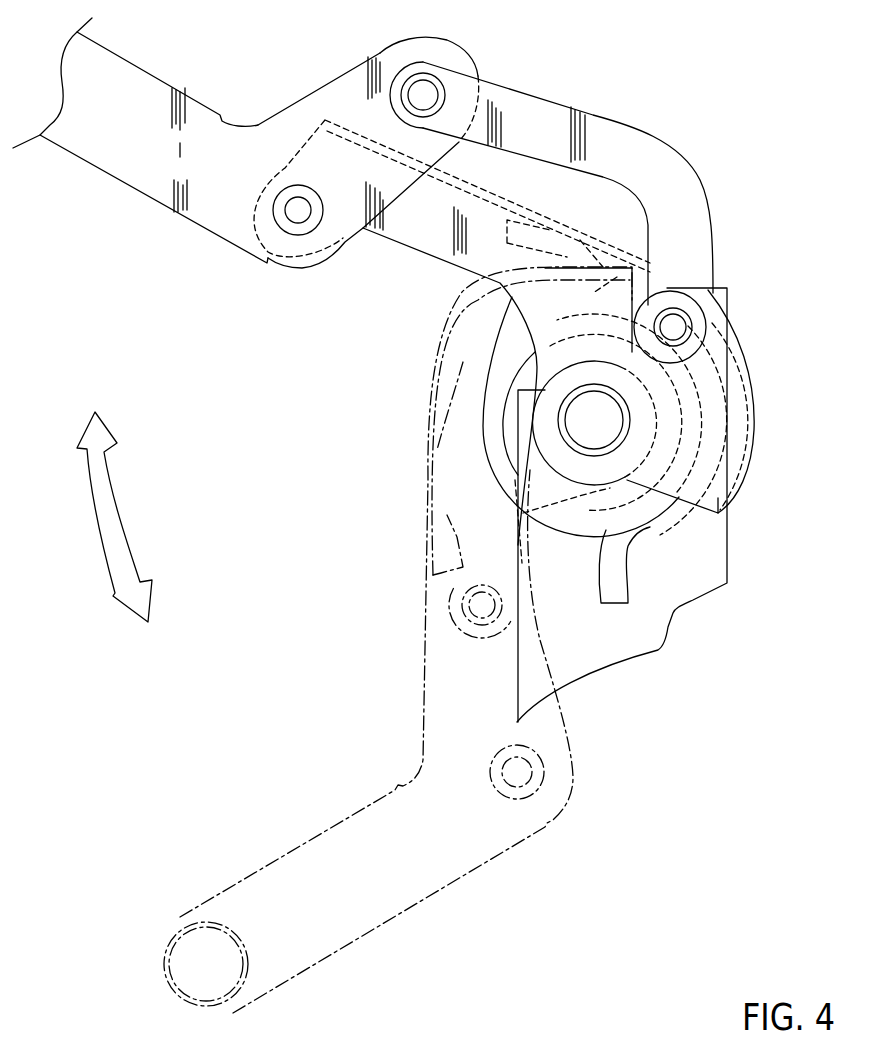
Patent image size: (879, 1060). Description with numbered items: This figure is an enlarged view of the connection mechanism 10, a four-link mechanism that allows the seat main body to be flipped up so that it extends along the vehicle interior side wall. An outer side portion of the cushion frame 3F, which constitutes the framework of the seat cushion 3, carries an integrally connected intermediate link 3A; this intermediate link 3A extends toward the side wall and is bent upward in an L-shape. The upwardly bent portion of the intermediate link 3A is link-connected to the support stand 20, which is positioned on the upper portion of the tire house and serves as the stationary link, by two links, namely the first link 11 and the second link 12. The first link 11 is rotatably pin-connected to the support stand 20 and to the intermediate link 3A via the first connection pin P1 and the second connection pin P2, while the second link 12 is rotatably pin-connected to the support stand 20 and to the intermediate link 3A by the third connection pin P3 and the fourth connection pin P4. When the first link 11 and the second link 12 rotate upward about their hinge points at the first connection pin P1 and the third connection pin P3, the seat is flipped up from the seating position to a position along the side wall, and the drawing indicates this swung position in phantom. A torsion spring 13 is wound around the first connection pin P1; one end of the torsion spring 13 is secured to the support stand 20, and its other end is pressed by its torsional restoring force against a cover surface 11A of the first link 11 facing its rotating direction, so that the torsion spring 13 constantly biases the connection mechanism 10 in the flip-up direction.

The seat cushion 3 is at (180, 938).
The cushion frame 3F is at (168, 950).
The intermediate link 3A is at (138, 162).
The connection mechanism 10 is at (742, 292).
The first link 11 is at (430, 222).
The cover surface 11A is at (497, 213).
The second link 12 is at (607, 140).
The torsion spring 13 is at (648, 507).
The support stand 20 is at (695, 555).
The first connection pin P1 is at (592, 421).
The second connection pin P2 is at (517, 772).
The third connection pin P3 is at (298, 212).
The fourth connection pin P4 is at (423, 95).